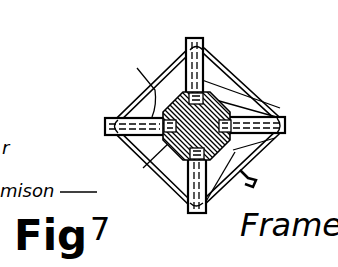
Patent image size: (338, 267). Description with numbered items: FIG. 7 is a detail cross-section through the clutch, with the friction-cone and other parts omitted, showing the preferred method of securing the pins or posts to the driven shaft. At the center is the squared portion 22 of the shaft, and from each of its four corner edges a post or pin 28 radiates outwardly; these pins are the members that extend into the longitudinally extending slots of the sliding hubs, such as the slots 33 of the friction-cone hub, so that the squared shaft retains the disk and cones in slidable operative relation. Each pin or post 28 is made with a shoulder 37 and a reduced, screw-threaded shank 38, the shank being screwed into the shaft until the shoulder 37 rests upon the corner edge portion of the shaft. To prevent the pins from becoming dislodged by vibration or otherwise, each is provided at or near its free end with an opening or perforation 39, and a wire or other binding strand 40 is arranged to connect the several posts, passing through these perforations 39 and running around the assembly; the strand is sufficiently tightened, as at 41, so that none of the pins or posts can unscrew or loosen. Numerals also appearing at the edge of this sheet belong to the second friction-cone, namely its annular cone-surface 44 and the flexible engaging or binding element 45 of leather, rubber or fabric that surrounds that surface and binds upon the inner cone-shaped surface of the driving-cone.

The squared portion 22 is at (262, 101).
The post or pin 28 is at (193, 37).
The shoulder 37 is at (148, 80).
The screw-threaded shank 38 is at (214, 93).
The openings or perforations 39 is at (116, 118).
The binding strand 40 is at (232, 62).
The tightened portion of binding strand 41 is at (256, 184).
The annular cone-surface 44 is at (273, 5).
The engaging or binding element 45 is at (326, 6).
The slots 33 is at (329, 37).